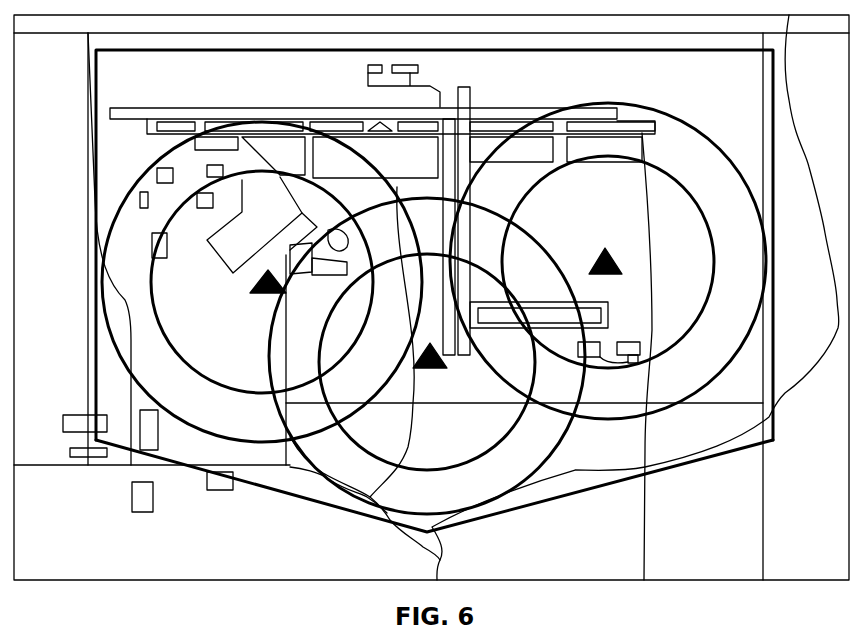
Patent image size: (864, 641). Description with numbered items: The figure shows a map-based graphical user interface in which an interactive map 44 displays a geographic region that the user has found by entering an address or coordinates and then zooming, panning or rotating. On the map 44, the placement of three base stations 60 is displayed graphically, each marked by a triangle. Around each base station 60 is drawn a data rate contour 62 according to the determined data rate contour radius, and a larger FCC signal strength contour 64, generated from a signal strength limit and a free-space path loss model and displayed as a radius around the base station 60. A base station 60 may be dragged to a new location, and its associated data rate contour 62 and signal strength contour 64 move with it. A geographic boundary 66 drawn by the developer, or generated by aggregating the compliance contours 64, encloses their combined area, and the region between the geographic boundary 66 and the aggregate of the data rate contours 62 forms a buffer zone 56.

The interactive map 44 is at (133, 581).
The buffer zone 56 is at (418, 315).
The base station 60 is at (262, 295).
The data rate contour 62 is at (203, 370).
The FCC signal strength contour 64 is at (655, 105).
The geographic boundary 66 is at (559, 497).